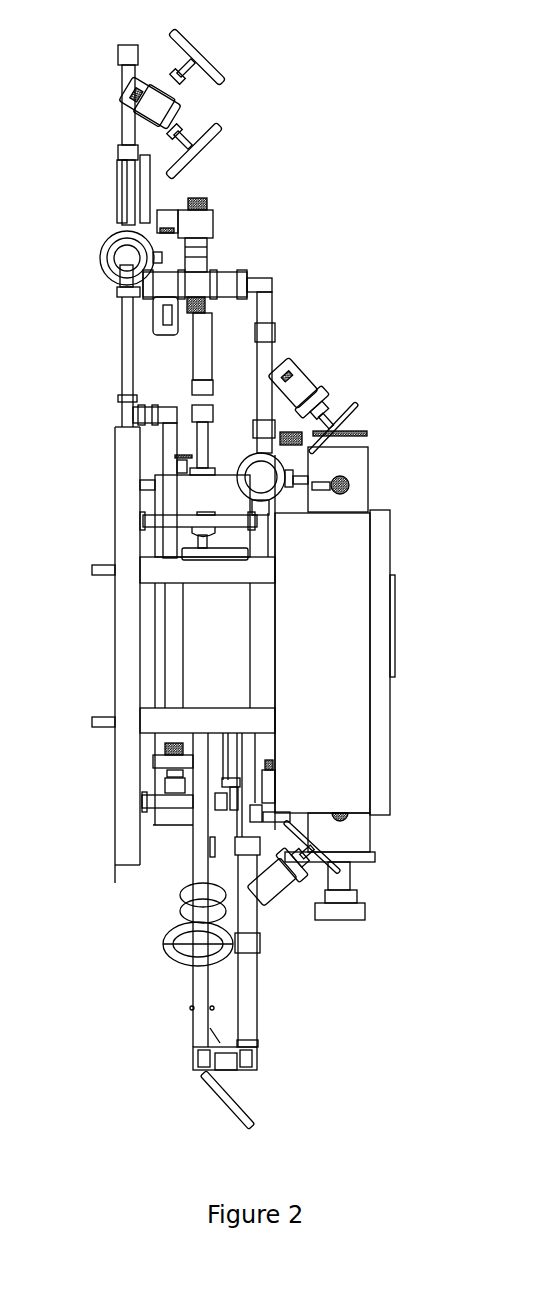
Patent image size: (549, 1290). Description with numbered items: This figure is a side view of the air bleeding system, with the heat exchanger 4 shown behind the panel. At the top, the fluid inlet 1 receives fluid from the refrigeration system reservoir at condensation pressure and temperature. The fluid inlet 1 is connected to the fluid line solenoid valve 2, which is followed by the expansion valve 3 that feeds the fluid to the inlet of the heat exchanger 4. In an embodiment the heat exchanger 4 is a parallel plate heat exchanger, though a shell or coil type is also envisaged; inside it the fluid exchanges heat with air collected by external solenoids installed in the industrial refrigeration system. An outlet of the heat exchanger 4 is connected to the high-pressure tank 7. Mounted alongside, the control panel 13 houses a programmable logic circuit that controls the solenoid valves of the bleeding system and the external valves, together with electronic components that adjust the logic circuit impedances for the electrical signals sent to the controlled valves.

The fluid inlet 1 is at (124, 59).
The fluid line solenoid valve 2 is at (208, 222).
The expansion valve 3 is at (245, 278).
The heat exchanger 4 is at (213, 657).
The high-pressure tank 7 is at (195, 495).
The control panel 13 is at (340, 760).